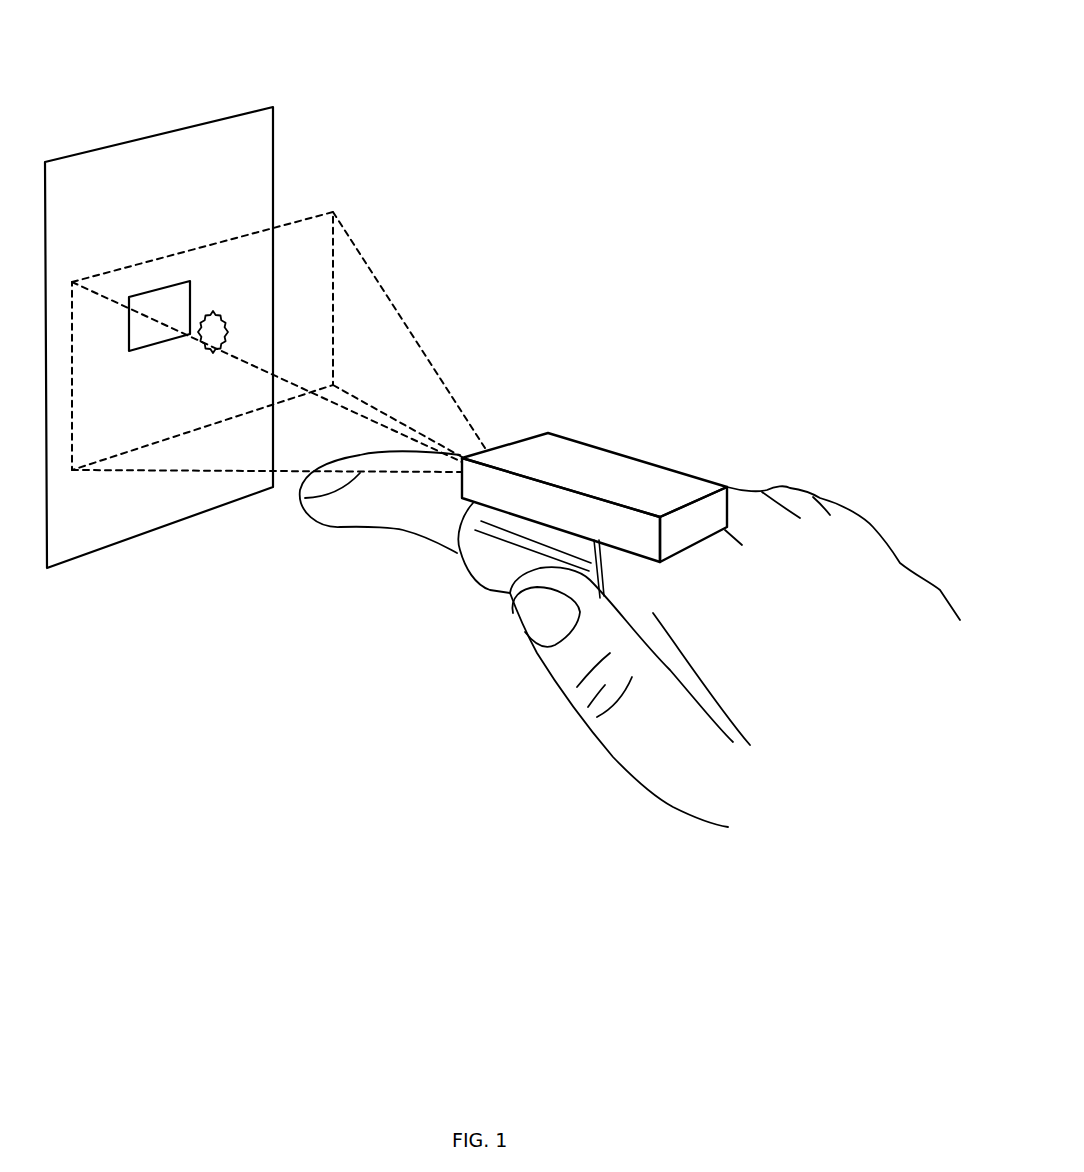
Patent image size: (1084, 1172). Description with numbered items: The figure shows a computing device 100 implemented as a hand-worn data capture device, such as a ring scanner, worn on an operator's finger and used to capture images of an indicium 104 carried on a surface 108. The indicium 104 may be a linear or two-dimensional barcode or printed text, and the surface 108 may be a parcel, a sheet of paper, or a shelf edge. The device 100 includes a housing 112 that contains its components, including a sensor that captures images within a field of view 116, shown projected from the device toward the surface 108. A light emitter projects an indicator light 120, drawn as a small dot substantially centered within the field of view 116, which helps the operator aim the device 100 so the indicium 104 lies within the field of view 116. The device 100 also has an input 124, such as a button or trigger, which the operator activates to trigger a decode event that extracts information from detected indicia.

The computing device 100 is at (564, 505).
The indicium 104 is at (152, 297).
The surface 108 is at (190, 148).
The housing 112 is at (627, 477).
The field of view 116 is at (385, 288).
The indicator light 120 is at (215, 315).
The input 124 is at (488, 575).